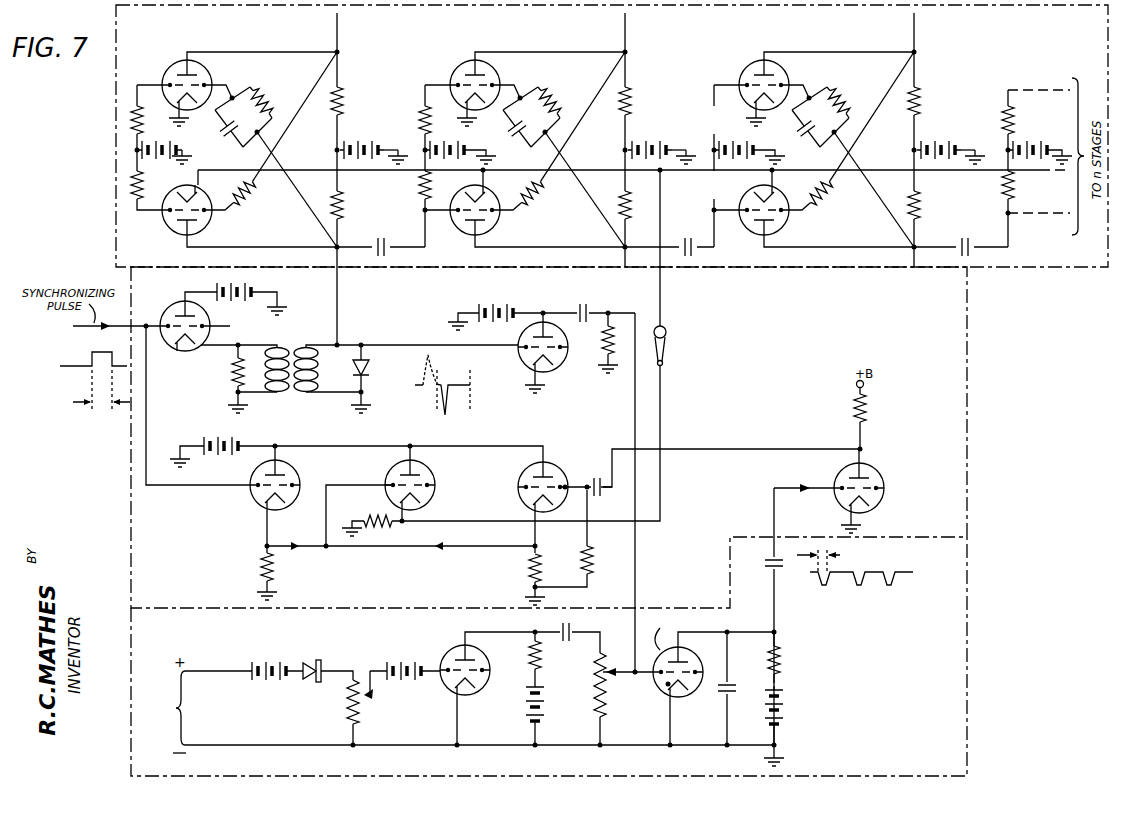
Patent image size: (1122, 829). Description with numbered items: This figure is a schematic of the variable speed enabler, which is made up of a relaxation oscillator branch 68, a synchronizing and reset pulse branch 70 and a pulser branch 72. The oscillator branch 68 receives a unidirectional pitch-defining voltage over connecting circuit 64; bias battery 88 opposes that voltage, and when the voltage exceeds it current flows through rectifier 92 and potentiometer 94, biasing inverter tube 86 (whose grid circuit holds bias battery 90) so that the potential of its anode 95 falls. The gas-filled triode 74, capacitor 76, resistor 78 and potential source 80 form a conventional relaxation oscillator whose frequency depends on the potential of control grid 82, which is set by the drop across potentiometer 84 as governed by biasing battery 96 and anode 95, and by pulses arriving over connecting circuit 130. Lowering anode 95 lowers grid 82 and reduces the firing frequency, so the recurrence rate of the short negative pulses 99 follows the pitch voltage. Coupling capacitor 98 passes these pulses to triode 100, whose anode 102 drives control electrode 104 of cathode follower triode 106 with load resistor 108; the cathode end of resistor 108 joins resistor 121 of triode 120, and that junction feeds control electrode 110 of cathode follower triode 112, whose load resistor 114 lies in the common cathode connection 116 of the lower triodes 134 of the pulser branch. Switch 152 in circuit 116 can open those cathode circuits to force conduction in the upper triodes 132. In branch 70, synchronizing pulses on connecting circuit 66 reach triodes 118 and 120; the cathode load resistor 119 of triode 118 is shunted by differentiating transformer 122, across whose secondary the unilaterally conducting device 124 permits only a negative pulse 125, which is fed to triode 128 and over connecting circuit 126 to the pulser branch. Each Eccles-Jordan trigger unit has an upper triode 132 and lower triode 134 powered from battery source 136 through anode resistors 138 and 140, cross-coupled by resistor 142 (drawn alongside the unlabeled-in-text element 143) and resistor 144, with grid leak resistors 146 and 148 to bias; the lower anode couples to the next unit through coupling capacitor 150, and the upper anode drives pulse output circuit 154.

The connecting circuit 64 is at (212, 708).
The connecting circuit 66 is at (122, 330).
The relaxation oscillator branch 68 is at (880, 683).
The synchronizing and reset pulse branch 70 is at (795, 395).
The pulser branch 72 is at (700, 69).
The gas-filled triode 74 is at (700, 665).
The capacitor 76 is at (720, 692).
The resistor 78 is at (786, 656).
The potential source 80 is at (786, 702).
The control grid 82 is at (660, 684).
The potentiometer 84 is at (597, 704).
The inverter tube 86 is at (470, 684).
The bias battery 88 is at (266, 658).
The bias battery 90 is at (401, 658).
The rectifier 92 is at (313, 659).
The potentiometer 94 is at (372, 703).
The anode 95 is at (455, 654).
The biasing battery 96 is at (578, 650).
The coupling capacitor 98 is at (768, 566).
The negative pulse 99 is at (858, 585).
The triode 100 is at (882, 503).
The anode 102 is at (879, 472).
The control electrode 104 is at (518, 497).
The triode 106 is at (520, 476).
The load resistor 108 is at (526, 568).
The control electrode 110 is at (420, 470).
The triode 112 is at (390, 472).
The load resistor 114 is at (366, 513).
The common cathode connection 116 is at (663, 416).
The triode 118 is at (213, 329).
The load resistor 119 is at (230, 368).
The triode 120 is at (296, 467).
The resistor 121 is at (281, 568).
The differentiating transformer 122 is at (292, 352).
The unilaterally conducting device 124 is at (365, 360).
The negative polarity pulse 125 is at (441, 381).
The connecting circuit 126 is at (339, 305).
The triode 128 is at (557, 362).
The connecting circuit 130 is at (633, 413).
The upper triode 132 is at (205, 82).
The lower triode 134 is at (207, 210).
The battery source 136 is at (355, 140).
The anode resistor 138 is at (345, 101).
The anode resistor 140 is at (345, 207).
The resistor 142 is at (266, 104).
The condenser 143 is at (220, 145).
The resistor 144 is at (283, 135).
The grid leak resistor 146 is at (106, 118).
The grid leak resistor 148 is at (106, 185).
The coupling capacitor 150 is at (399, 232).
The switch 152 is at (667, 350).
The pulse output circuit 154 is at (360, 179).